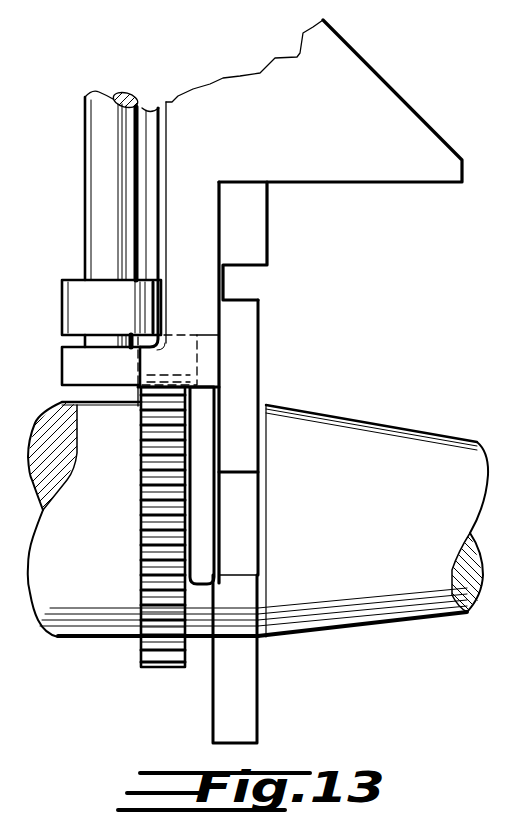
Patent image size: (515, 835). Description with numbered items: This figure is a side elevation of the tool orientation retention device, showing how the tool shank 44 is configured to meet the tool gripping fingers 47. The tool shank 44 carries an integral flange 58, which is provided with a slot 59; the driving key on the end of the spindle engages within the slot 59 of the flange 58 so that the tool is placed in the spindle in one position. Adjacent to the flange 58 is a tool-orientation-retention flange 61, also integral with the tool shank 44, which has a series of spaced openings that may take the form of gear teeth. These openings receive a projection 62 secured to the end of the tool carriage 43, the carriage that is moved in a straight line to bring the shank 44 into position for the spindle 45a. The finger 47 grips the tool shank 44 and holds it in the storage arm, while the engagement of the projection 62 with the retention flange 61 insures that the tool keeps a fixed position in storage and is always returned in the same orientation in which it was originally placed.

The tool carriage 43 is at (314, 301).
The tool shank 44 is at (378, 442).
The rod 45a is at (82, 243).
The finger 47 is at (198, 518).
The flange 58 is at (240, 697).
The slot 59 is at (241, 571).
The tool-orientation-retention flange 61 is at (158, 538).
The projection 62 is at (143, 402).